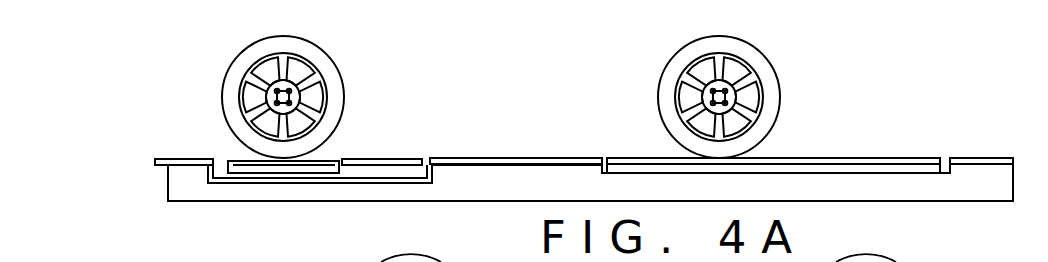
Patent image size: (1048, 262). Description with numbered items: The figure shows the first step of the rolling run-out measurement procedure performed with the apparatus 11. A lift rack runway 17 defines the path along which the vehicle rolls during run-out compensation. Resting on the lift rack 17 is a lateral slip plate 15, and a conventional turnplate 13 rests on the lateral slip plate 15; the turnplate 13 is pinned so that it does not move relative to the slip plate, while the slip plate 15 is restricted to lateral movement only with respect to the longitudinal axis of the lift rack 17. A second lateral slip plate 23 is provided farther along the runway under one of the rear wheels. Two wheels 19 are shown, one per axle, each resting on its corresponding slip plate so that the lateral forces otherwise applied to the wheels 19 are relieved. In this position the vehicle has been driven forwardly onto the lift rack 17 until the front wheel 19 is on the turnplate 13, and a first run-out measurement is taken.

The apparatus 11 is at (155, 113).
The turnplate 13 is at (237, 158).
The lateral slip plate 15 is at (366, 159).
The lift rack runway 17 is at (495, 158).
The wheel 19 is at (334, 61).
The lateral slip plate 23 is at (823, 158).